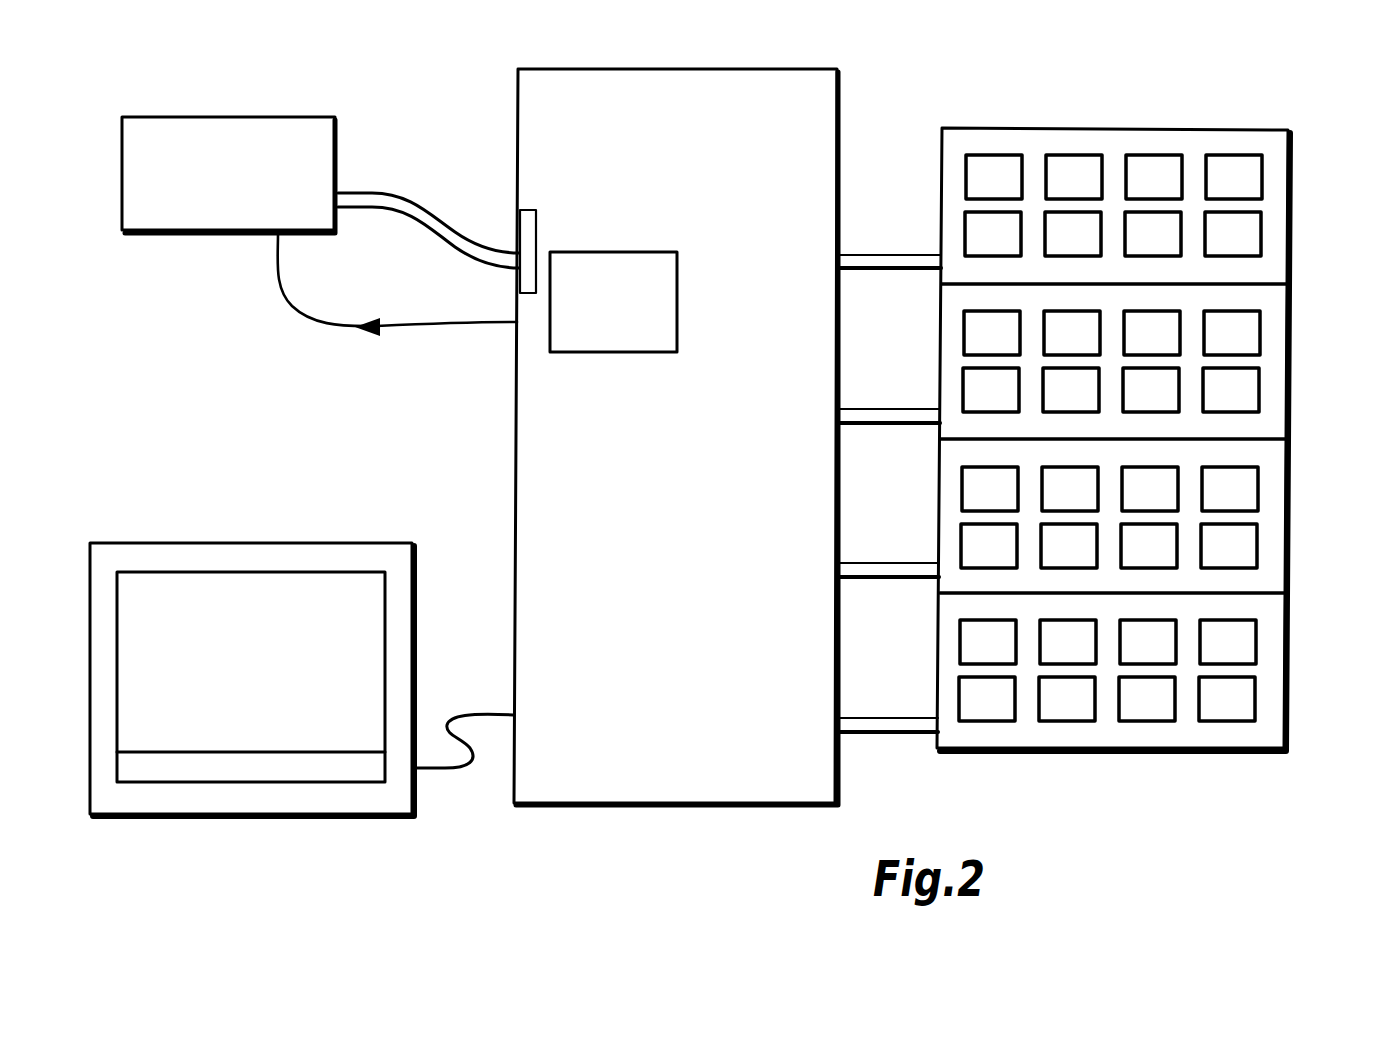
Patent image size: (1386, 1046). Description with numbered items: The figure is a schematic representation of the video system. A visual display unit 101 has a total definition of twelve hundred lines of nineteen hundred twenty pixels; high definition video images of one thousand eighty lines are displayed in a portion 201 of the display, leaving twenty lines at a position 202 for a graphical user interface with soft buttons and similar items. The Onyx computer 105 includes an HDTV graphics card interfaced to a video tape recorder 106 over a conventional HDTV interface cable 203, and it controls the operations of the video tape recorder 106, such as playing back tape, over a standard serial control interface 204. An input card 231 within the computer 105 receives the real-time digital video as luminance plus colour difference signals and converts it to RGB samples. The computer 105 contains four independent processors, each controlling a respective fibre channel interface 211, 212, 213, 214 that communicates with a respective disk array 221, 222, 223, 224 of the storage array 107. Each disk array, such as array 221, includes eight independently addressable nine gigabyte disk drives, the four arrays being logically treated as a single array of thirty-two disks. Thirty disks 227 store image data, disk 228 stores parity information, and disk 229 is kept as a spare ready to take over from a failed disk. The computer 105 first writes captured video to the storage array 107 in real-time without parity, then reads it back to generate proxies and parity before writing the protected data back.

The visual display unit 101 is at (197, 800).
The Onyx computer 105 is at (677, 142).
The video tape recorder 106 is at (227, 137).
The storage array 107 is at (1263, 140).
The portion of the visual display unit 201 is at (232, 612).
The position for graphical user interface 202 is at (288, 768).
The HDTV interface cable 203 is at (383, 203).
The serial control interface 204 is at (292, 300).
The fibre channel interface 211 is at (888, 262).
The fibre channel interface 212 is at (887, 415).
The fibre channel interface 213 is at (884, 568).
The fibre channel interface 214 is at (882, 723).
The disk array 221 is at (1277, 206).
The disk array 222 is at (1277, 357).
The disk array 223 is at (1272, 519).
The disk array 224 is at (1270, 673).
The disk drive 227 is at (992, 177).
The parity disk 228 is at (1148, 705).
The spare disk 229 is at (1228, 705).
The input card 231 is at (530, 210).